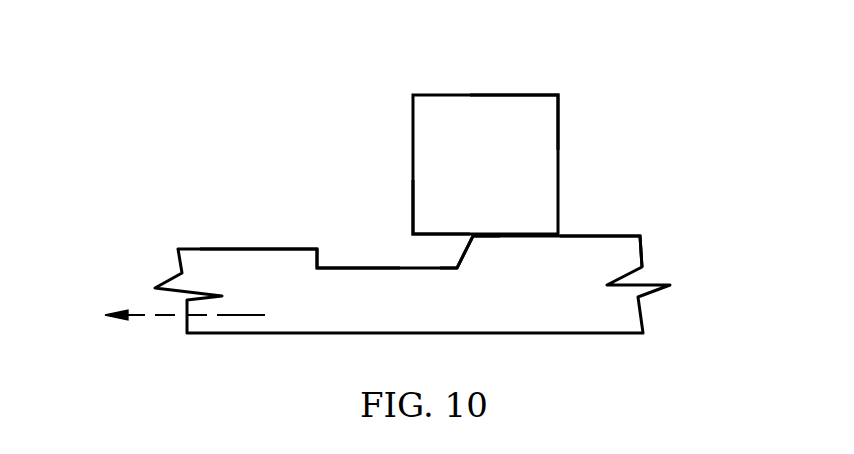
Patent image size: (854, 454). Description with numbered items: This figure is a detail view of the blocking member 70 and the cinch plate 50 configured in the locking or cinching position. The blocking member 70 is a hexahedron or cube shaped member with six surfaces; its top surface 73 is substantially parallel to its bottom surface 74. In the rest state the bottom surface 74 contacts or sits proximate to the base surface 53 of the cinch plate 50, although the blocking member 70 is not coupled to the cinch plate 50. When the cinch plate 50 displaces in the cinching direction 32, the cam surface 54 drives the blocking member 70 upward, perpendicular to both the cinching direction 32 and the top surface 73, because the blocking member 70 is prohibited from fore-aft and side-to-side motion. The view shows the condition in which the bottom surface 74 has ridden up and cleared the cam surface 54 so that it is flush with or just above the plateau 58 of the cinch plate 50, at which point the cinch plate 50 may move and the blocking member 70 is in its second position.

The cinching direction 32 is at (168, 315).
The cinch plate 50 is at (317, 322).
The base surface 53 is at (348, 265).
The cam surface 54 is at (475, 248).
The plateau 58 is at (605, 235).
The blocking member 70 is at (410, 143).
The top surface 73 is at (517, 93).
The bottom surface 74 is at (445, 233).